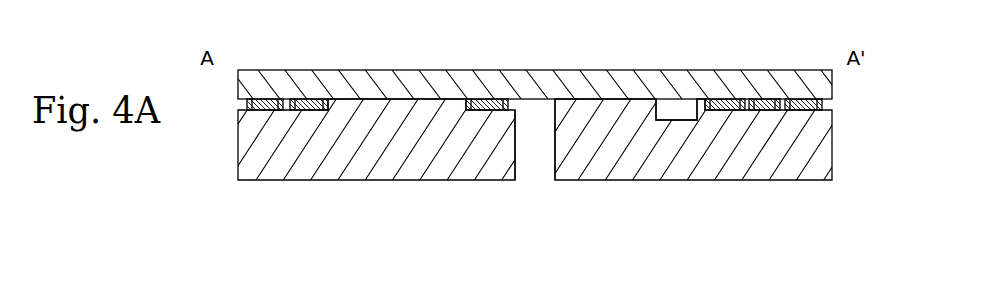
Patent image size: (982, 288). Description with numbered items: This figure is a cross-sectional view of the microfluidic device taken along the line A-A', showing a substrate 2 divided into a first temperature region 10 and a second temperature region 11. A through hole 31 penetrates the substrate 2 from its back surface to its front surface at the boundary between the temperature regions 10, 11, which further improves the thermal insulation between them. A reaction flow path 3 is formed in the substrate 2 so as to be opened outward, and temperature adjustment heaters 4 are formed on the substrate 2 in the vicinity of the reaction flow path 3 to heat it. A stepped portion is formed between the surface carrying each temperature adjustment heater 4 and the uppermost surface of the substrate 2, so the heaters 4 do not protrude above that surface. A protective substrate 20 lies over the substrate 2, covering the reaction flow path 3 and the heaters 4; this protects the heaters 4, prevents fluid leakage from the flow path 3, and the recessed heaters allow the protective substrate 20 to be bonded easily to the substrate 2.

The substrate 2 is at (552, 176).
The reaction flow path 3 is at (677, 110).
The temperature adjustment heater 4 is at (268, 99).
The first temperature region 10 is at (380, 170).
The second temperature region 11 is at (705, 170).
The protective substrate 20 is at (832, 87).
The through hole 31 is at (532, 170).